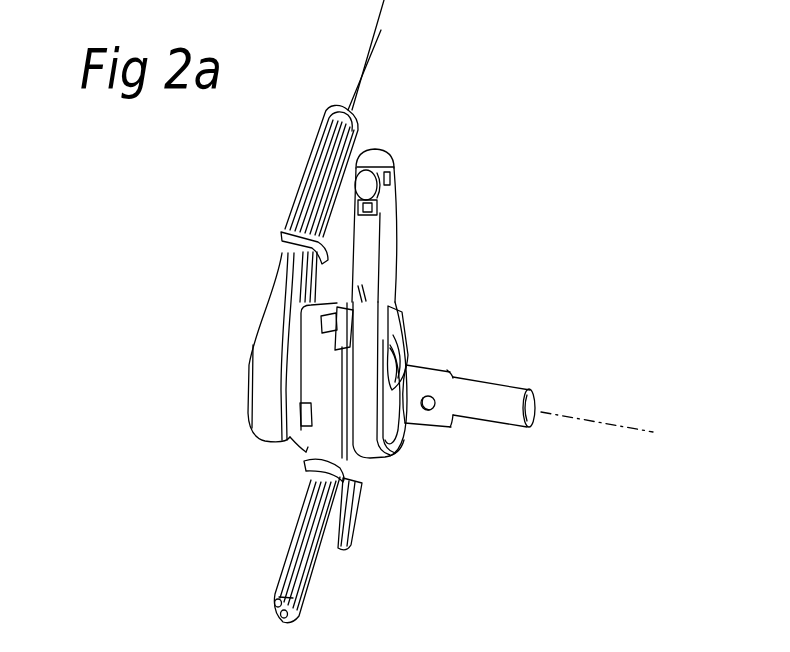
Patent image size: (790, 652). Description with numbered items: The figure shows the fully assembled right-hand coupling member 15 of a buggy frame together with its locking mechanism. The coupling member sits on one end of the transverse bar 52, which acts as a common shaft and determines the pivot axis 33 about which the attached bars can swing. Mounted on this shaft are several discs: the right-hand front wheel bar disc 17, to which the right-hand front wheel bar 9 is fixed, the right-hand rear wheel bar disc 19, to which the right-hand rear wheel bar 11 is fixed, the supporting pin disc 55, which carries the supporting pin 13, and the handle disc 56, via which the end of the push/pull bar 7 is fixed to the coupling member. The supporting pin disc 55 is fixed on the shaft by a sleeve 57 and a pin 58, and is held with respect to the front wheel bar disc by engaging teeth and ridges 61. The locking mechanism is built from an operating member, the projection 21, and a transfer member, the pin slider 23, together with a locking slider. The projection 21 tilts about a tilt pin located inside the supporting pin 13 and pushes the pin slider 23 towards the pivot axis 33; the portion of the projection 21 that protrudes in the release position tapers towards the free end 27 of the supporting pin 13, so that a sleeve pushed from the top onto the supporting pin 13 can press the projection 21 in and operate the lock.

The ridges 61 is at (367, 50).
The push/pull bar 7 is at (330, 132).
The free end of the supporting pin 27 is at (378, 160).
The projection 21 is at (370, 189).
The supporting pin 13 is at (383, 234).
The right-hand coupling member 15 is at (412, 285).
The pin slider 23 is at (407, 325).
The sleeve 57 is at (432, 372).
The transverse bar 52 is at (535, 405).
The pivot axis 33 is at (612, 423).
The pin 58 is at (440, 418).
The supporting pin disc 55 is at (390, 447).
The handle disc 56 is at (278, 318).
The right-hand front wheel bar disc 17 is at (327, 370).
The right-hand rear wheel bar disc 19 is at (302, 433).
The right-hand rear wheel bar 11 is at (354, 516).
The right-hand front wheel bar 9 is at (297, 585).